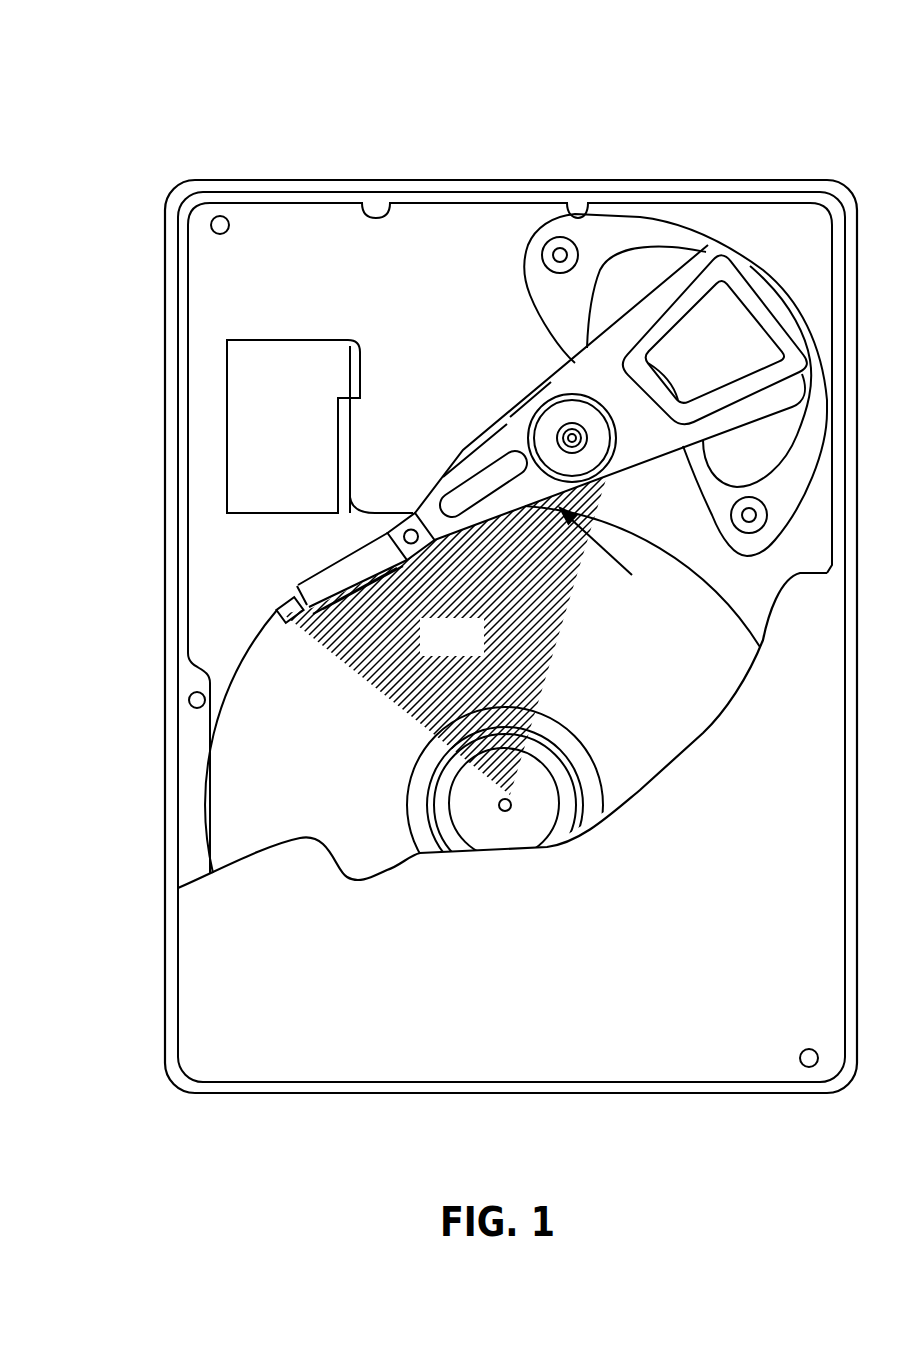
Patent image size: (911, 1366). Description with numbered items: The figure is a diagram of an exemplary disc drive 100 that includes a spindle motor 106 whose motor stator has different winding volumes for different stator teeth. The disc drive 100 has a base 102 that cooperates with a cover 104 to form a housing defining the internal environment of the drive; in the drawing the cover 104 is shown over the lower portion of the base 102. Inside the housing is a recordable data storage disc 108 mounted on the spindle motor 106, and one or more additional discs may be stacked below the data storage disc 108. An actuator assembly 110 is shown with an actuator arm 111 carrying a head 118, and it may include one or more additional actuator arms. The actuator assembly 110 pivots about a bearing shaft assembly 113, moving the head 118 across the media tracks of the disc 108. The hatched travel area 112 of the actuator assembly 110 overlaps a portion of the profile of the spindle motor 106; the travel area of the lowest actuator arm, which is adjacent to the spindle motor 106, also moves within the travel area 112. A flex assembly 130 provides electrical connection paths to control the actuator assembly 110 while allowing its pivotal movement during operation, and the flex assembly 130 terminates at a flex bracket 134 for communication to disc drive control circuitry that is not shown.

The disc drive 100 is at (160, 90).
The base 102 is at (428, 292).
The cover 104 is at (513, 1033).
The spindle motor 106 is at (518, 832).
The recordable data storage disc 108 is at (325, 815).
The actuator assembly 110 is at (610, 561).
The actuator arm 111 is at (453, 477).
The travel area 112 is at (475, 652).
The bearing shaft assembly 113 is at (562, 395).
The head 118 is at (280, 614).
The flex assembly 130 is at (463, 446).
The flex bracket 134 is at (298, 447).